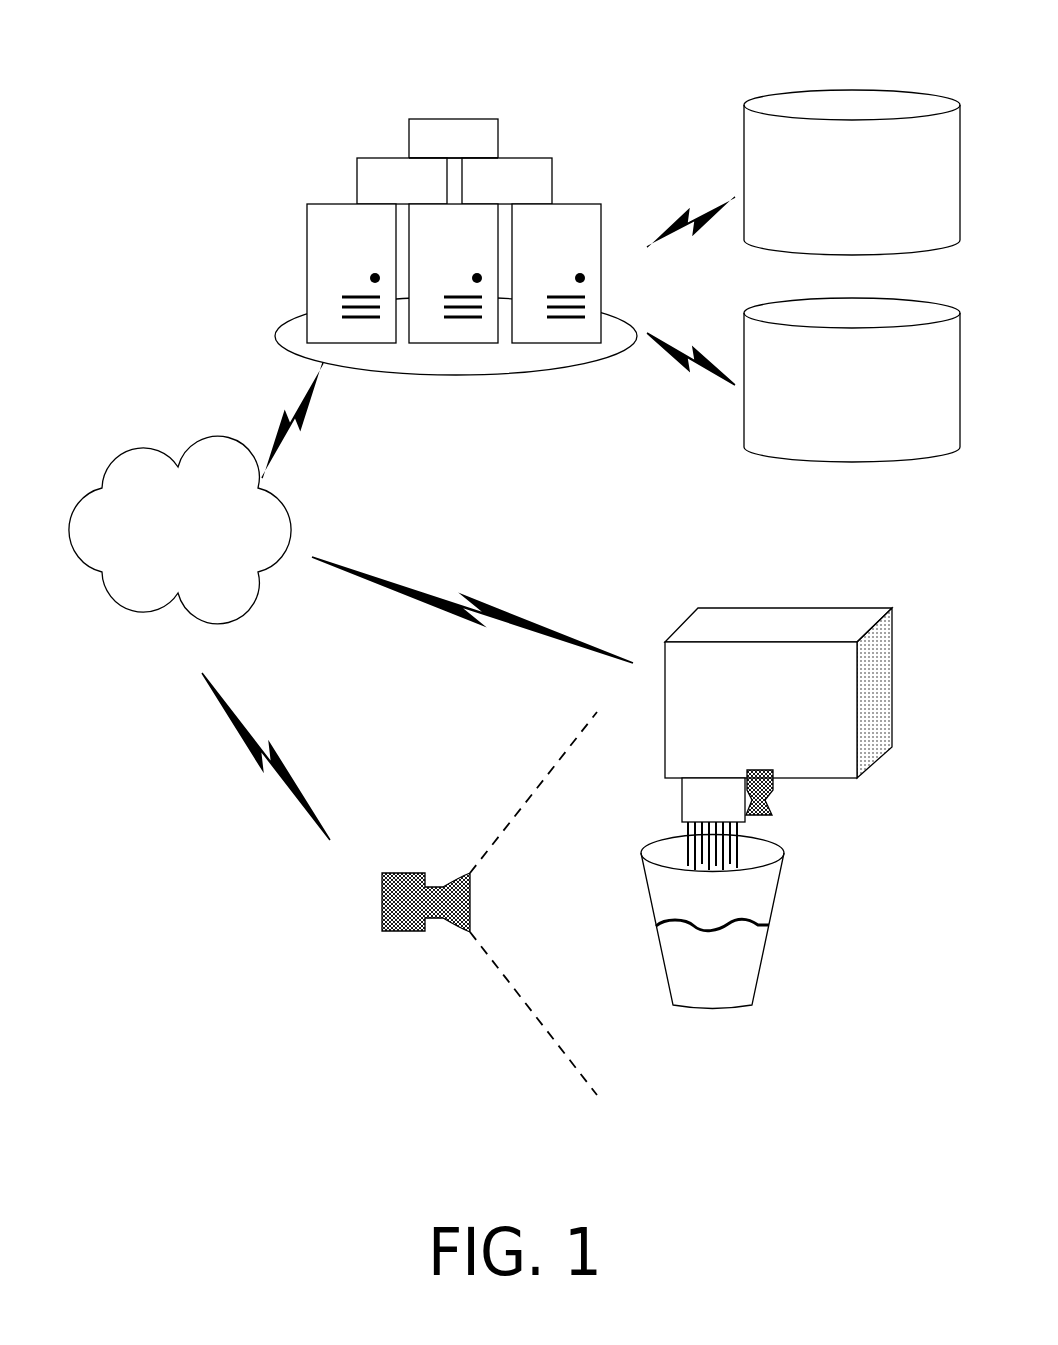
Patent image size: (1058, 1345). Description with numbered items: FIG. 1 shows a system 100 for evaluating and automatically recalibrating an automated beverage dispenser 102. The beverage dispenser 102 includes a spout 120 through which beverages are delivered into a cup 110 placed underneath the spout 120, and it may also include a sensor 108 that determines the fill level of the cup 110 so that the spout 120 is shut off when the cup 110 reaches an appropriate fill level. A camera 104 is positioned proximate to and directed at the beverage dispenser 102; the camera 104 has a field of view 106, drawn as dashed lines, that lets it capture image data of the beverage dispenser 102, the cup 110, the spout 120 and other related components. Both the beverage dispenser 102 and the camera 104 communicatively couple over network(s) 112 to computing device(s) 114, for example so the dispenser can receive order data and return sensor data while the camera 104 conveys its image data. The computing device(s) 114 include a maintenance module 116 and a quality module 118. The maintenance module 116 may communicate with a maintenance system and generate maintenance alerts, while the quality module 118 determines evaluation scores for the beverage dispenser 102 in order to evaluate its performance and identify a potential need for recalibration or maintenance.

The system 100 is at (140, 48).
The beverage dispenser 102 is at (892, 642).
The camera 104 is at (405, 927).
The field of view 106 is at (513, 818).
The sensor 108 is at (773, 790).
The cup 110 is at (777, 890).
The network(s) 112 is at (194, 550).
The computing device(s) 114 is at (497, 133).
The maintenance module 116 is at (867, 188).
The quality module 118 is at (867, 396).
The spout 120 is at (682, 803).